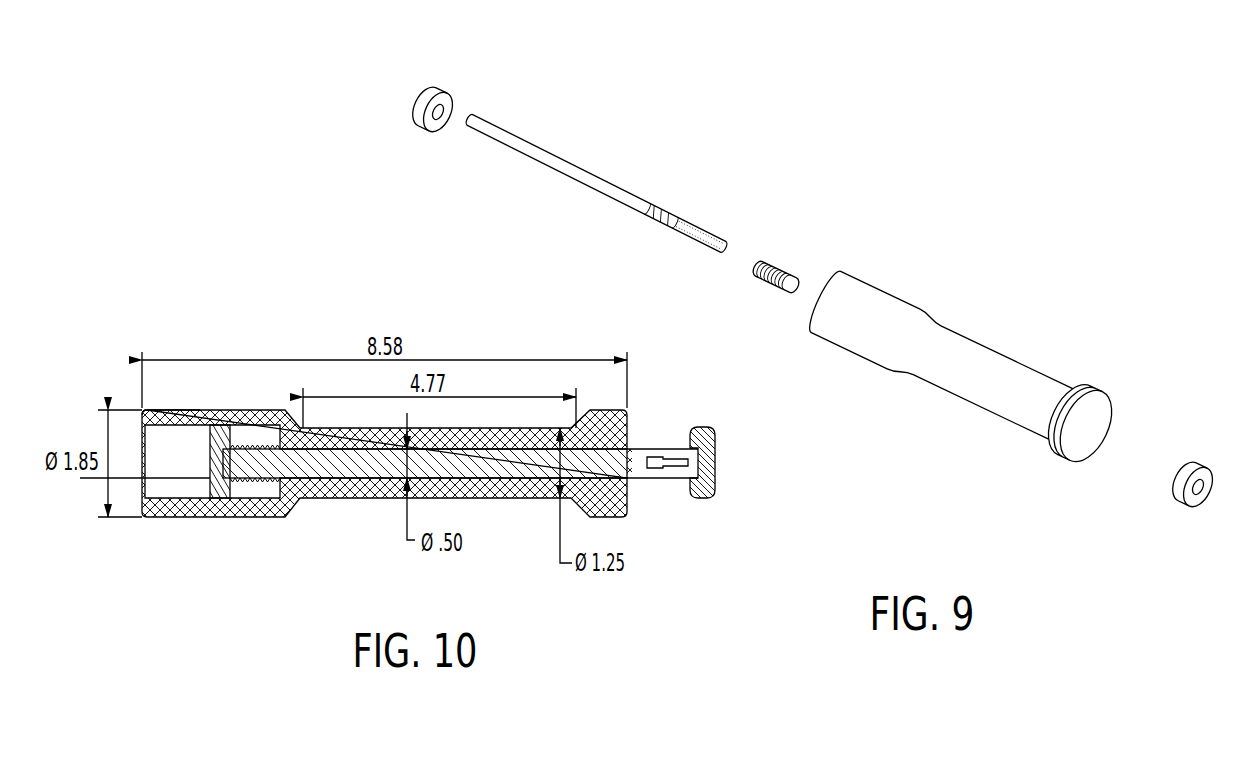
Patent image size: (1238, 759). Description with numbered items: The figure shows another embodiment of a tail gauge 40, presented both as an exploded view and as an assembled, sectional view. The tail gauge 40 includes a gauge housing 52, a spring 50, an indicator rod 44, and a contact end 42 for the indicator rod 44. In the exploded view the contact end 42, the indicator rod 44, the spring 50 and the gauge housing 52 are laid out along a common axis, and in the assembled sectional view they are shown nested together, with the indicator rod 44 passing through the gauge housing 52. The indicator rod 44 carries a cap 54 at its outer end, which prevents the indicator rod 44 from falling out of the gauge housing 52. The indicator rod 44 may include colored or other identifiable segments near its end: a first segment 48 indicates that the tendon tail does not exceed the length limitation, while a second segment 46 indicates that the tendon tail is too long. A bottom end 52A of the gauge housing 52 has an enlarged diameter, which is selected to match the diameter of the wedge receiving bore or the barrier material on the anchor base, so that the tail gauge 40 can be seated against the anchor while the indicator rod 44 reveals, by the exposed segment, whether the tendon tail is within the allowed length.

In FIG. 9, the tail gauge 40 is at (578, 101).
In FIG. 10, the tail gauge 40 is at (506, 550).
In FIG. 9, the contact end 42 is at (427, 128).
In FIG. 10, the contact end 42 is at (212, 462).
In FIG. 9, the indicator rod 44 is at (565, 178).
In FIG. 10, the indicator rod 44 is at (327, 467).
In FIG. 9, the second segment 46 is at (660, 207).
In FIG. 9, the first segment 48 is at (706, 232).
In FIG. 9, the spring 50 is at (797, 279).
In FIG. 10, the spring 50 is at (245, 480).
In FIG. 9, the gauge housing 52 is at (960, 341).
In FIG. 10, the gauge housing 52 is at (345, 427).
In FIG. 10, the bottom end 52A is at (180, 408).
In FIG. 9, the cap 54 is at (1180, 506).
In FIG. 10, the cap 54 is at (698, 499).